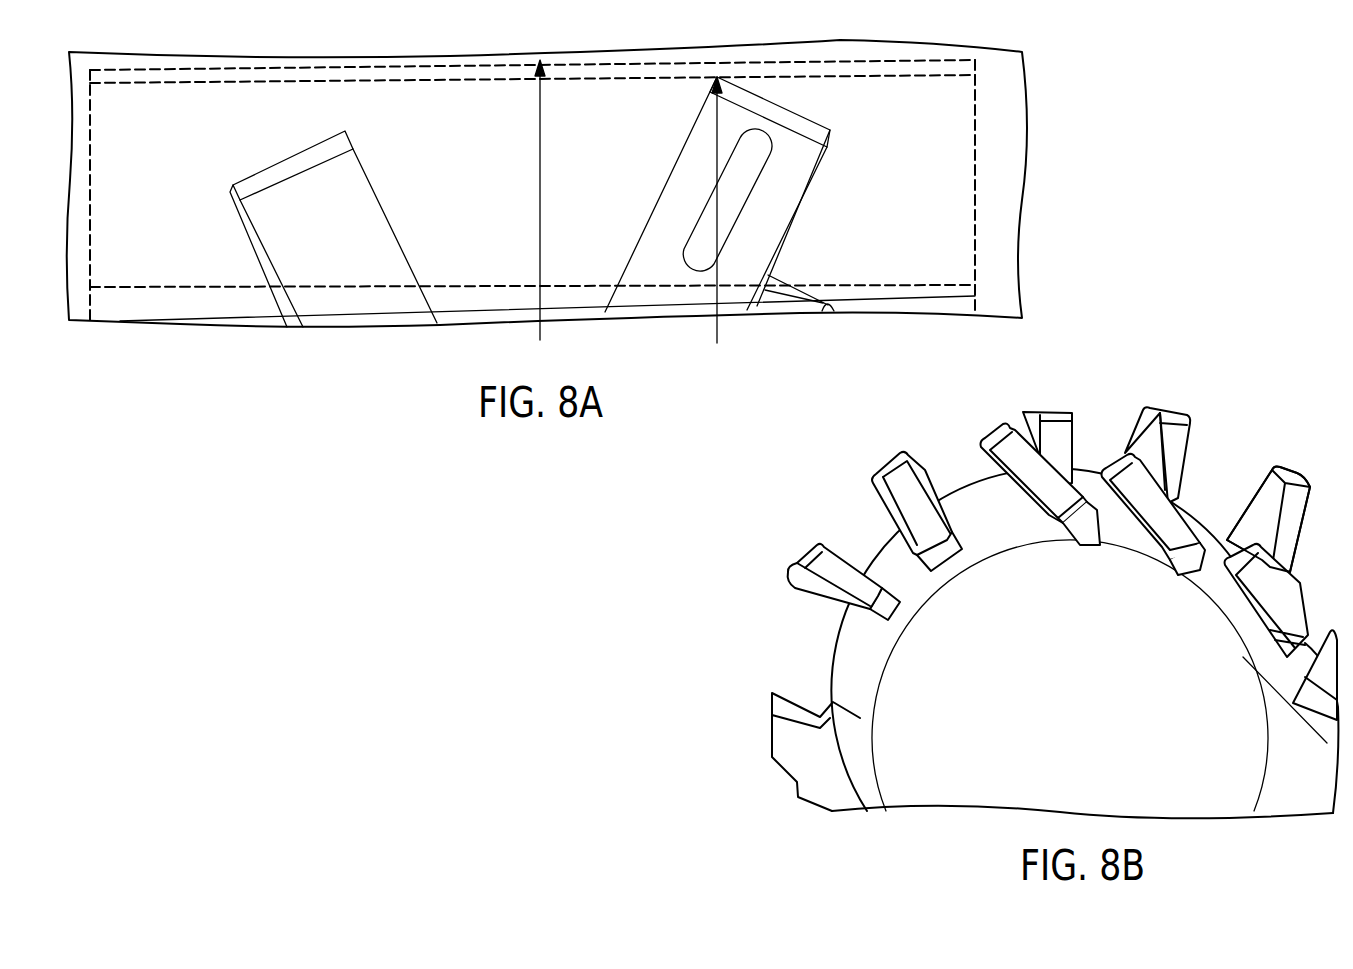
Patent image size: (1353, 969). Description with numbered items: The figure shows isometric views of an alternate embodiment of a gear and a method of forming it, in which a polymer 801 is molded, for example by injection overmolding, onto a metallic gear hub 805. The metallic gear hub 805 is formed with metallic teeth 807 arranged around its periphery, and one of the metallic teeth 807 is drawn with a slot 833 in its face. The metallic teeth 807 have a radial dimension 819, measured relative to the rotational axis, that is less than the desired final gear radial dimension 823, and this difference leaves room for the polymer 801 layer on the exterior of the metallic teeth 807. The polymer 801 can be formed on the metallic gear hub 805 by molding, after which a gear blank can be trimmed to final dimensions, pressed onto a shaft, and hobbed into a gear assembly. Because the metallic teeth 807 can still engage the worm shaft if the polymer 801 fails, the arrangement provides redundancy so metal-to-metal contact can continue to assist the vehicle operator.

In FIG. 8A, the polymer 801 is at (950, 102).
In FIG. 8A, the metallic teeth 807 is at (812, 172).
In FIG. 8B, the metallic teeth 807 is at (1285, 470).
In FIG. 8A, the slot 833 is at (717, 183).
In FIG. 8A, the final gear radial dimension 823 is at (540, 336).
In FIG. 8A, the radial dimension 819 is at (718, 328).
In FIG. 8B, the metallic gear hub 805 is at (1237, 798).